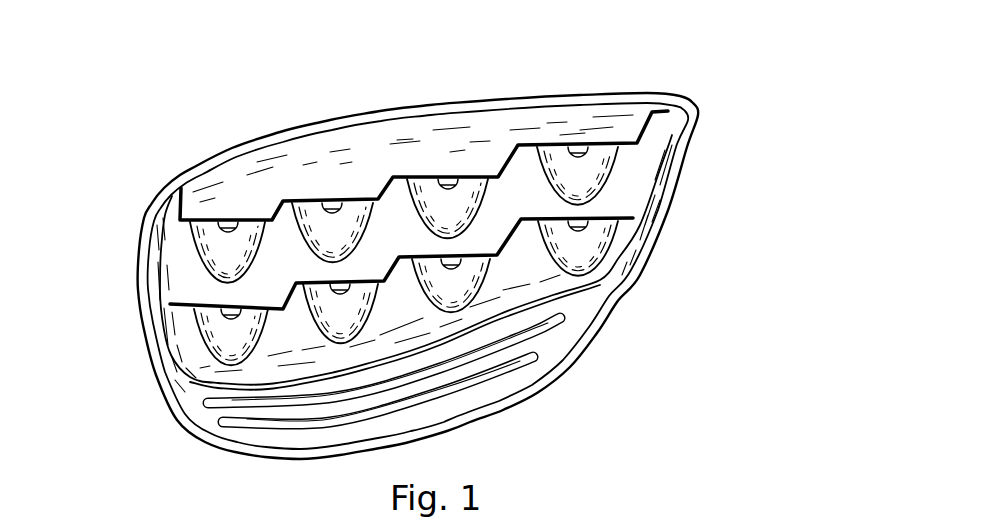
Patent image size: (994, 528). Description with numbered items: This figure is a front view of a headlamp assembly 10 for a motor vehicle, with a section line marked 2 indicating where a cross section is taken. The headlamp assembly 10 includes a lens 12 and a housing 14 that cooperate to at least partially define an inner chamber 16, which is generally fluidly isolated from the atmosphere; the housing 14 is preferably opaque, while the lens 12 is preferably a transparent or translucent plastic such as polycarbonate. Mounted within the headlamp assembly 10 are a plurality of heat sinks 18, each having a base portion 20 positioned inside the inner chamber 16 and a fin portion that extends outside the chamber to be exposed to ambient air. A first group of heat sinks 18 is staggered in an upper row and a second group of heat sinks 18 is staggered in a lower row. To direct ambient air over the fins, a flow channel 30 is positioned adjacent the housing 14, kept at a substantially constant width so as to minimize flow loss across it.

The headlamp assembly 10 is at (582, 406).
The lens 12 is at (630, 190).
The housing 14 is at (515, 97).
The inner chamber 16 is at (287, 260).
The heat sink 18 is at (672, 114).
The base portion 20 is at (405, 252).
The flow channel 30 is at (576, 323).
The section line 2- 2 is at (328, 121).